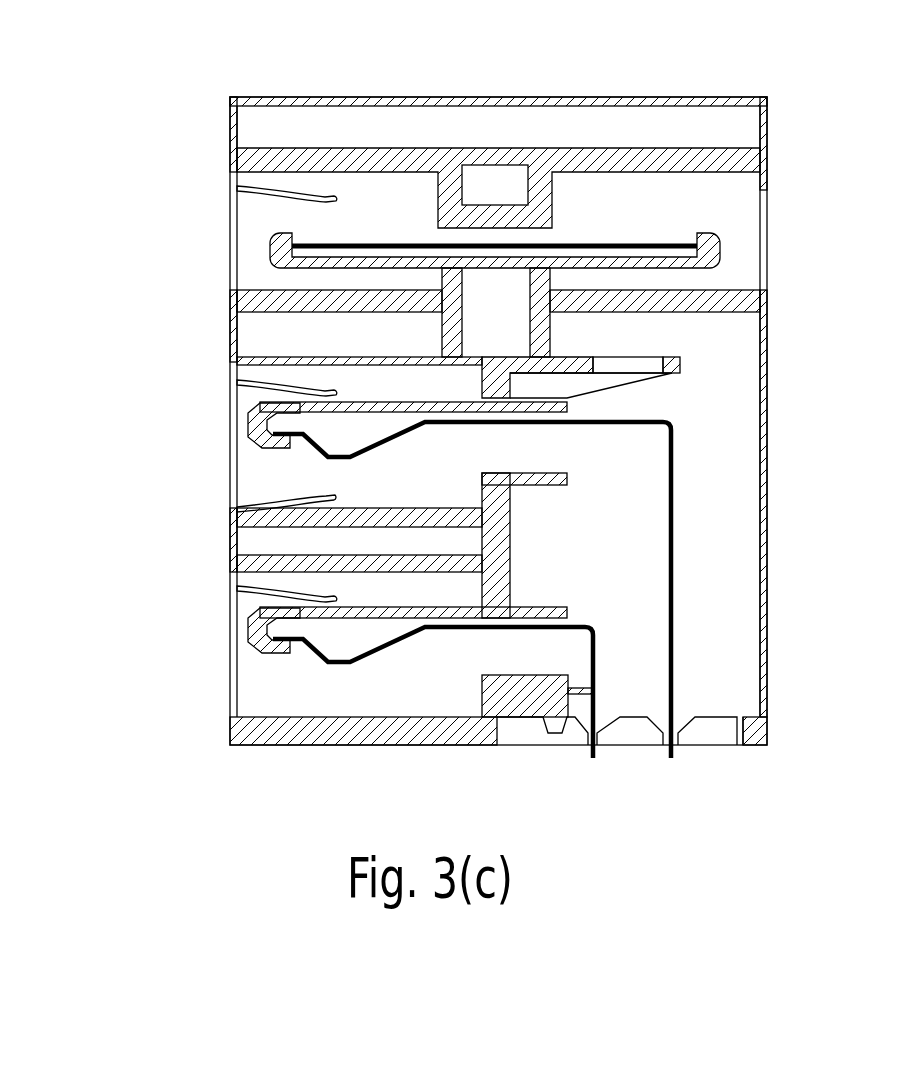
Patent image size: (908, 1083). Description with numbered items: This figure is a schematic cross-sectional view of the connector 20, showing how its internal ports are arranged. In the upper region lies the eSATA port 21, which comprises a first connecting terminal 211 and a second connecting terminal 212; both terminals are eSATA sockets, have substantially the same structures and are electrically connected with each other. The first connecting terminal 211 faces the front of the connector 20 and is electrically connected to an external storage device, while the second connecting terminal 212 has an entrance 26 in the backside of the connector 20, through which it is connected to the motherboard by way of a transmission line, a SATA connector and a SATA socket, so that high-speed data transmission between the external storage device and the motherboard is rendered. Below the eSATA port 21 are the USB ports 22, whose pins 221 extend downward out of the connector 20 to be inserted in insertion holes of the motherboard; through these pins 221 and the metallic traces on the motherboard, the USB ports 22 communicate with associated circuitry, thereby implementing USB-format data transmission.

The connector 20 is at (890, 73).
The eSATA port 21 is at (227, 243).
The first connecting terminal 211 is at (231, 188).
The second connecting terminal 212 is at (733, 241).
The USB port 22 is at (227, 458).
The pin 221 is at (673, 592).
The entrance 26 is at (775, 198).